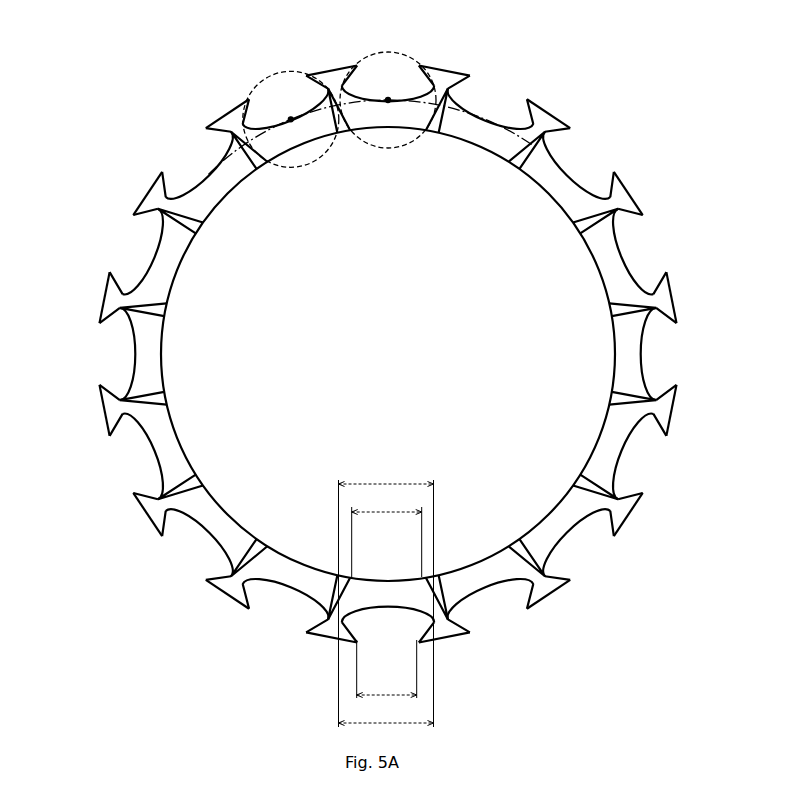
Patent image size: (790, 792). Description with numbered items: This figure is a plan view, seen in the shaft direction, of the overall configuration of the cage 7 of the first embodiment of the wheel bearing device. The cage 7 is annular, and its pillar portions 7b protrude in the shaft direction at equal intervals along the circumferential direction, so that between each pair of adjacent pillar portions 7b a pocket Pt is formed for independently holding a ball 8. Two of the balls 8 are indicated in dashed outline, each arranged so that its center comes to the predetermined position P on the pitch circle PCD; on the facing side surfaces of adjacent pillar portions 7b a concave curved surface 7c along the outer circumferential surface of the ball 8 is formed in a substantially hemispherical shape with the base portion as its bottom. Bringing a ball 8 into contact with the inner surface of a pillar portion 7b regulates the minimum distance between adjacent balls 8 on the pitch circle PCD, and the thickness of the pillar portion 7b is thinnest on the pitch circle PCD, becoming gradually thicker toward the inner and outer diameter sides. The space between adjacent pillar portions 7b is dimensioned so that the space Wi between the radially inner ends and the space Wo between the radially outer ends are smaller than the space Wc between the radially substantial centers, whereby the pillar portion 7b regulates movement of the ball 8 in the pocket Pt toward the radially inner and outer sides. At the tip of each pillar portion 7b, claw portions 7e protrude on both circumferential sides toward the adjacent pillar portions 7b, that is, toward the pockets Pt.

The cage 7 is at (69, 45).
The pillar portion 7b is at (227, 113).
The concave curved surface 7c is at (232, 183).
The claw portion 7e is at (207, 126).
The ball 8 is at (299, 166).
The predetermined position P is at (288, 122).
The pitch circle PCD is at (217, 163).
The pocket Pt is at (376, 46).
The space between radially substantial centers Wc is at (386, 594).
The space between radially inner ends Wi is at (387, 533).
The space between radially outer ends Wo is at (387, 669).